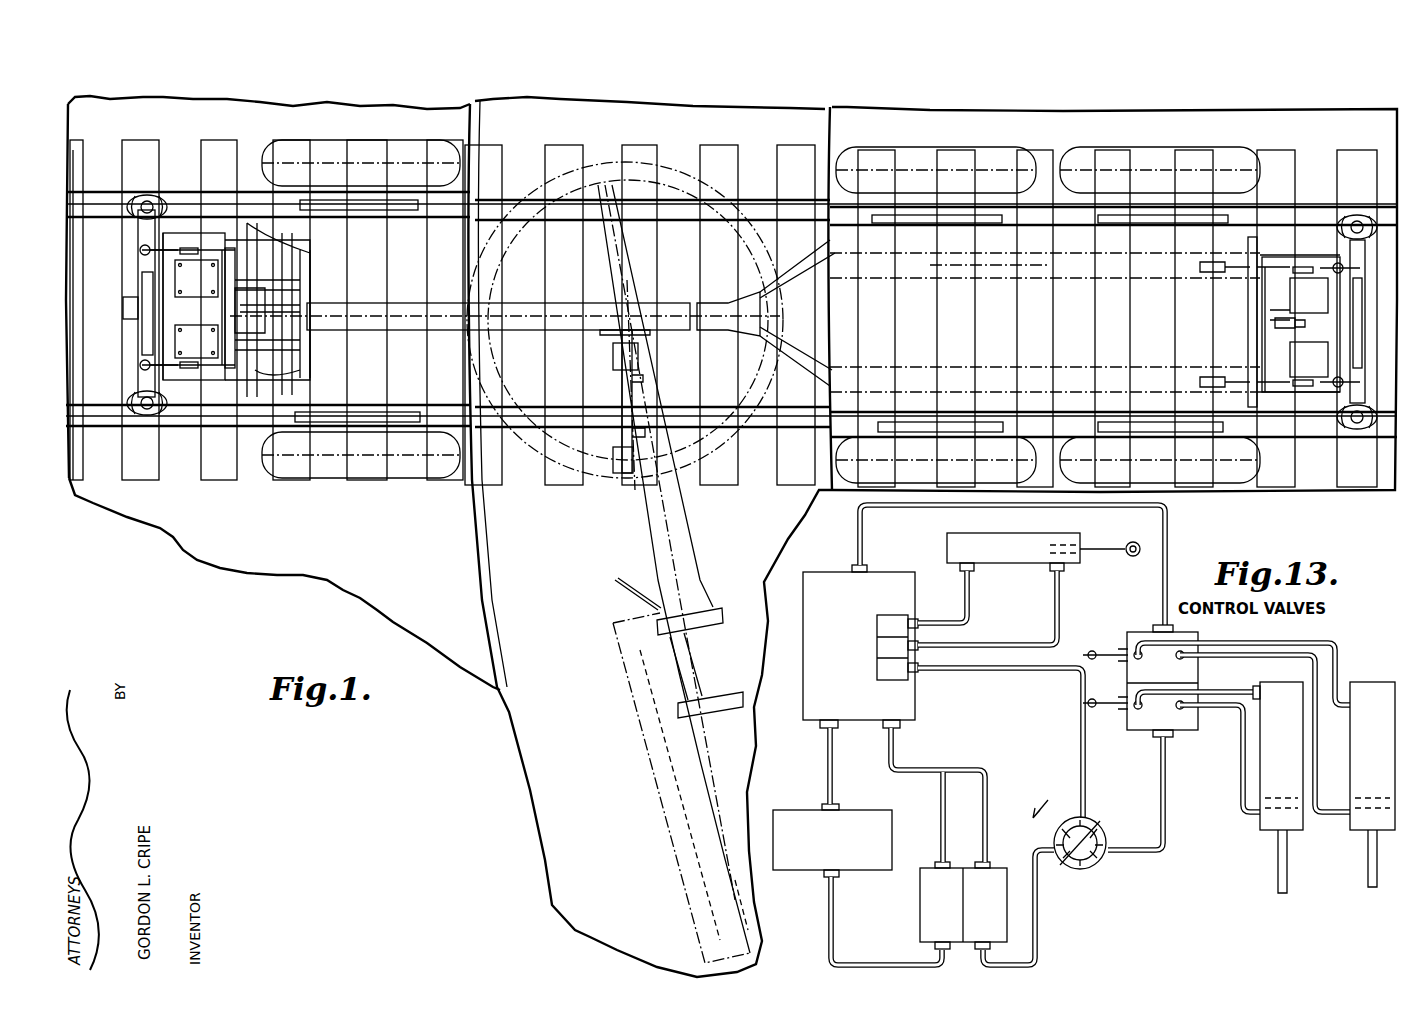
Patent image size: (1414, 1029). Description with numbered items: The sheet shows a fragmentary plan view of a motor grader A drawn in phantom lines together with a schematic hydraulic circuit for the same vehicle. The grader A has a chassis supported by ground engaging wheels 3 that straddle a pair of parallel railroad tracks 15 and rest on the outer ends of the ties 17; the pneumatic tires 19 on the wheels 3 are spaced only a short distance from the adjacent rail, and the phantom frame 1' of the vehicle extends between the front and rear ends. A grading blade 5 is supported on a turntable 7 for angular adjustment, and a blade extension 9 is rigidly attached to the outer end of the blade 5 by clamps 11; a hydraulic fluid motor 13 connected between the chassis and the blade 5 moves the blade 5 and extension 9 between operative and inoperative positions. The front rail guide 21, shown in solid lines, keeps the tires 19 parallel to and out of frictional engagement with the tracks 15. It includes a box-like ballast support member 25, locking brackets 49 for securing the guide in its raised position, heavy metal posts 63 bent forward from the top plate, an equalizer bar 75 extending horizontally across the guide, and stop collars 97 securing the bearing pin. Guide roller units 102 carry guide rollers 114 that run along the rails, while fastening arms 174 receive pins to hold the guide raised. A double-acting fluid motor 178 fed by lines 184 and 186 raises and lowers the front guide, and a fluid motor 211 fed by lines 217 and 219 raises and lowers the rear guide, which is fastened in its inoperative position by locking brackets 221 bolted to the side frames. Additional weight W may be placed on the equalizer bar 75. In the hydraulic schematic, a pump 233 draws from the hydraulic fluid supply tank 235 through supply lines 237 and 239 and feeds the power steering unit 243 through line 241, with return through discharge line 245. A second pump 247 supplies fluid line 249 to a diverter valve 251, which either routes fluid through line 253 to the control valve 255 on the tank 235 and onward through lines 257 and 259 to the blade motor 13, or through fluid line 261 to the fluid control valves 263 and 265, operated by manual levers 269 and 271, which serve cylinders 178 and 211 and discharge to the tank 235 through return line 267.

In FIG. 1, the ground engaging wheels 3 is at (338, 160).
In FIG. 1, the grading blade 5 is at (650, 580).
In FIG. 1, the turntable 7 is at (540, 450).
In FIG. 1, the blade extension 9 is at (650, 790).
In FIG. 1, the clamps 11 is at (728, 620).
In FIG. 1, the hydraulic cylinder or fluid motor 13 is at (608, 387).
In FIG. 13, the hydraulic cylinder or fluid motor 13 is at (1022, 545).
In FIG. 1, the railroad tracks 15 is at (460, 222).
In FIG. 1, the ties 17 is at (205, 465).
In FIG. 1, the pneumatic tires 19 is at (420, 215).
In FIG. 1, the front rail guide 21 is at (204, 232).
In FIG. 1, the ballast support member 25 is at (194, 390).
In FIG. 1, the locking brackets 49 is at (188, 250).
In FIG. 1, the metal post 63 is at (140, 372).
In FIG. 1, the equalizer bar 75 is at (128, 238).
In FIG. 1, the stop collar 97 is at (125, 310).
In FIG. 1, the guide roller unit 102 is at (143, 188).
In FIG. 1, the guide roller 114 is at (125, 197).
In FIG. 1, the fastening arm 174 is at (230, 250).
In FIG. 1, the hydraulic cylinder or fluid motor 178 is at (210, 292).
In FIG. 13, the hydraulic cylinder or fluid motor 178 is at (1258, 768).
In FIG. 13, the fluid line 184 is at (1200, 728).
In FIG. 13, the fluid line 186 is at (1245, 688).
In FIG. 1, the fluid motor 211 is at (1300, 313).
In FIG. 13, the fluid motor 211 is at (1372, 682).
In FIG. 13, the fluid line 217 is at (1300, 643).
In FIG. 13, the fluid line 219 is at (1250, 650).
In FIG. 1, the locking bracket 221 is at (1240, 275).
In FIG. 13, the pump 233 is at (920, 907).
In FIG. 13, the hydraulic fluid supply tank 235 is at (826, 750).
In FIG. 13, the supply line 237 is at (895, 742).
In FIG. 13, the supply line 239 is at (938, 805).
In FIG. 13, the line 241 is at (828, 910).
In FIG. 13, the power steering unit 243 is at (775, 810).
In FIG. 13, the discharge line 245 is at (826, 765).
In FIG. 13, the second hydraulic pump 247 is at (1010, 850).
In FIG. 13, the fluid line 249 is at (1040, 930).
In FIG. 13, the selector or diverter valve 251 is at (1105, 855).
In FIG. 13, the fluid line 253 is at (1078, 730).
In FIG. 13, the control valve 255 is at (890, 622).
In FIG. 13, the line 257 is at (1065, 585).
In FIG. 13, the line 259 is at (962, 582).
In FIG. 13, the fluid line 261 is at (1135, 793).
In FIG. 13, the fluid control valve 263 is at (1182, 730).
In FIG. 13, the fluid control valve 265 is at (1130, 630).
In FIG. 13, the return line 267 is at (1168, 532).
In FIG. 13, the manual control lever 269 is at (1080, 705).
In FIG. 13, the manual control lever 271 is at (1075, 672).
In FIG. 1, the motor grader A is at (403, 300).
In FIG. 1, the additional weight W is at (137, 265).
In FIG. 1, the frame 1' is at (990, 288).